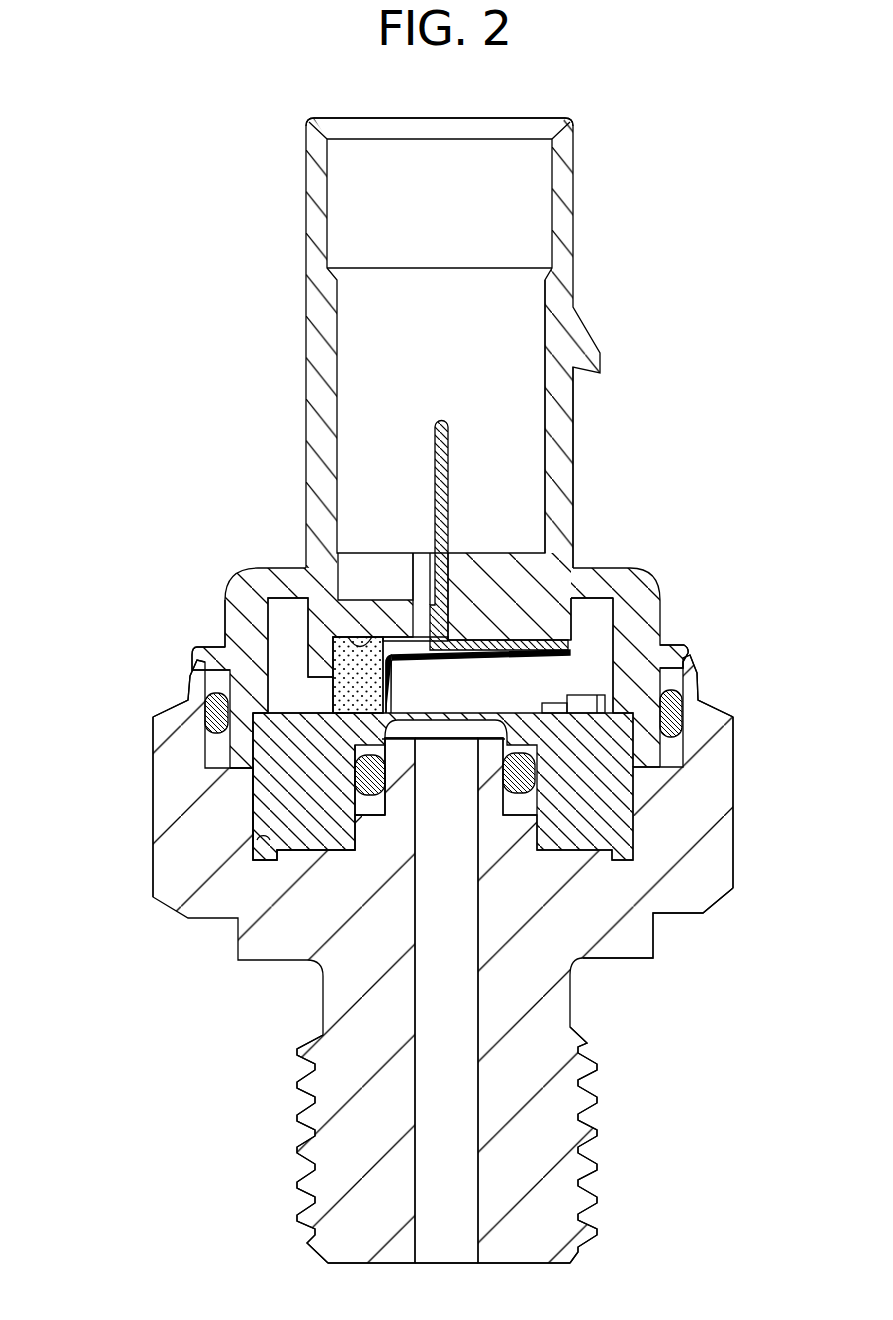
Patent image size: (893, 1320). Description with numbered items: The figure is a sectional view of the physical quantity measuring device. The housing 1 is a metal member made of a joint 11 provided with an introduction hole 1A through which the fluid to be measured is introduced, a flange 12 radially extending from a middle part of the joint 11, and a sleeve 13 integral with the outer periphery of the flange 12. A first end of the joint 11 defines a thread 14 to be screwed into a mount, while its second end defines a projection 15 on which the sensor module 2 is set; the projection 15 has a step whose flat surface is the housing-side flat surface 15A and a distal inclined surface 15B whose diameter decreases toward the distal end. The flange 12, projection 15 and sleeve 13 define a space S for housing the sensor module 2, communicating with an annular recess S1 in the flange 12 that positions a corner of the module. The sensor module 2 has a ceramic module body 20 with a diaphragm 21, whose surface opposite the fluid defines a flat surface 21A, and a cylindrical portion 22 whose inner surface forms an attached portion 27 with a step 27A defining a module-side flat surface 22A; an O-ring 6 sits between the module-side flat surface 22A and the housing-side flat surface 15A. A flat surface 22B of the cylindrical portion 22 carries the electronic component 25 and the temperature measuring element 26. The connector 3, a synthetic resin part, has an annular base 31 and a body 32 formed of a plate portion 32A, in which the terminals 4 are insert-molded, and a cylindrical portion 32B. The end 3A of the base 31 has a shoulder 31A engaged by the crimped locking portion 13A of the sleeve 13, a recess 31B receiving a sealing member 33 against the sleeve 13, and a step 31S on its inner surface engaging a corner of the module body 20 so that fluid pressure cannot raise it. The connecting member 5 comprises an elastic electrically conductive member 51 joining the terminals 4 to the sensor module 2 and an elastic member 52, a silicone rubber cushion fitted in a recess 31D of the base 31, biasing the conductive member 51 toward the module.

The housing 1 is at (112, 1042).
The introduction hole 1A is at (478, 1088).
The sensor module 2 is at (288, 686).
The connector 3 is at (243, 160).
The end of the base 3A is at (238, 742).
The terminal 4 is at (449, 450).
The connecting member 5 is at (208, 486).
The O-ring 6 is at (385, 798).
The joint 11 is at (611, 1060).
The flange 12 is at (620, 915).
The sleeve 13 is at (156, 768).
The locking portion 13A is at (690, 655).
The thread 14 is at (300, 1128).
The projection 15 is at (521, 798).
The housing-side flat surface 15A is at (358, 822).
The distal inclined surface 15B is at (350, 800).
The module body 20 is at (313, 745).
The diaphragm 21 is at (457, 712).
The flat surface 21A is at (457, 710).
The cylindrical portion 22 is at (618, 793).
The module-side flat surface 22A is at (408, 765).
The flat surface 22B is at (640, 615).
The electronic component 25 is at (582, 695).
The temperature measuring element 26 is at (557, 702).
The attached portion 27 is at (512, 848).
The step 27A is at (492, 748).
The base 31 is at (192, 663).
The shoulder 31A is at (690, 658).
The recess 31B is at (660, 752).
The recess 31D is at (370, 637).
The step 31S is at (262, 702).
The body 32 is at (318, 347).
The plate portion 32A is at (497, 567).
The cylindrical portion 32B is at (565, 470).
The sealing member 33 is at (680, 708).
The electrically conductive member 51 is at (432, 633).
The elastic member 52 is at (334, 662).
The space S is at (253, 770).
The recess S1 is at (262, 834).